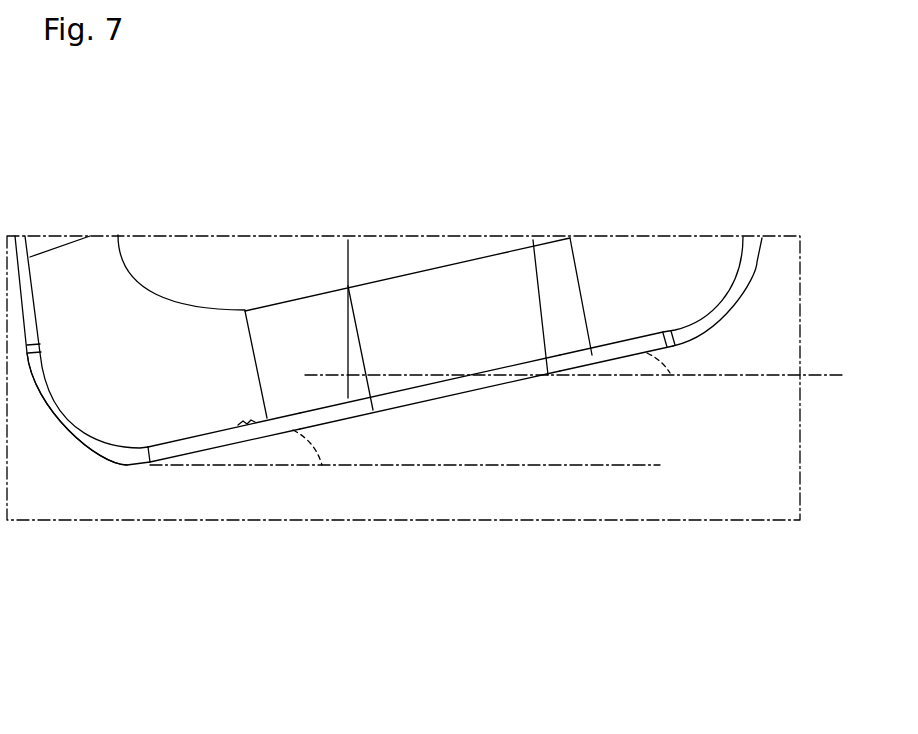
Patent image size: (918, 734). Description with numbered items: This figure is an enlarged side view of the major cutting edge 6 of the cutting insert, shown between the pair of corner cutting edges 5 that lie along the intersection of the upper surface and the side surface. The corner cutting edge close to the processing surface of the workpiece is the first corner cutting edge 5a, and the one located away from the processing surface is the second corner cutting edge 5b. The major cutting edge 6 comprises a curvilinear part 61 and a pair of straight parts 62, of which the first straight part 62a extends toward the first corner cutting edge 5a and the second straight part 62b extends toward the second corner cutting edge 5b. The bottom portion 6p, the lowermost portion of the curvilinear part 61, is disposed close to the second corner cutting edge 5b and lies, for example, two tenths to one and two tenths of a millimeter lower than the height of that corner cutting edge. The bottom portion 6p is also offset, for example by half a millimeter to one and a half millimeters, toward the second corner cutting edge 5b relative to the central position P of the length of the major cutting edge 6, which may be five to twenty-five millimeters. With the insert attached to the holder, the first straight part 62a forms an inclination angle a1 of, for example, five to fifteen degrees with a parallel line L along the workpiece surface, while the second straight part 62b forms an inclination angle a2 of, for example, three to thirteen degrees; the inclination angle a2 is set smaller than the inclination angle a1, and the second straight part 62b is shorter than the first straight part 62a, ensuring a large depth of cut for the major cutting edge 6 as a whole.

The corner cutting edges 5 is at (403, 425).
The first corner cutting edge 5a is at (93, 460).
The second corner cutting edge 5b is at (737, 313).
The major cutting edge 6 is at (440, 410).
The curvilinear part 61 is at (502, 382).
The straight parts 62 is at (440, 527).
The first straight part 62a is at (253, 438).
The second straight part 62b is at (623, 358).
The bottom portion 6p is at (548, 375).
The central position P is at (449, 383).
The parallel line L is at (497, 424).
The inclination angle a1 is at (323, 447).
The inclination angle a2 is at (676, 364).